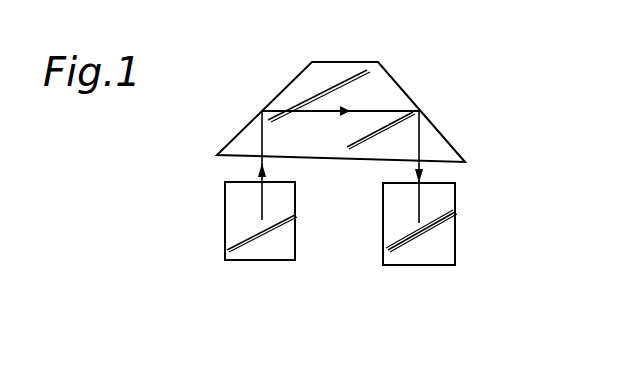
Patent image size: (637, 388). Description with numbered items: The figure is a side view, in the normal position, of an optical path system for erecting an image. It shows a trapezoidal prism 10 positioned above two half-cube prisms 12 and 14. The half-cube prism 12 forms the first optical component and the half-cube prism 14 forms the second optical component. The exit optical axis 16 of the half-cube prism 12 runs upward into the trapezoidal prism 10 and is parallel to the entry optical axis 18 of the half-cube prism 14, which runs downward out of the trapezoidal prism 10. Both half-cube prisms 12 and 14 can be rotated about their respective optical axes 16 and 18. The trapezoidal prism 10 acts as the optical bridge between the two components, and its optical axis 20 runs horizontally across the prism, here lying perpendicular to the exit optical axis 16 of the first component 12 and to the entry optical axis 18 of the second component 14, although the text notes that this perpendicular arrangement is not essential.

The trapezoidal prism 10 is at (383, 78).
The half-cube prism 12 is at (268, 247).
The half-cube prism 14 is at (423, 252).
The exit optical axis 16 is at (258, 171).
The entry optical axis 18 is at (421, 210).
The optical axis of the optical bridge 20 is at (357, 113).